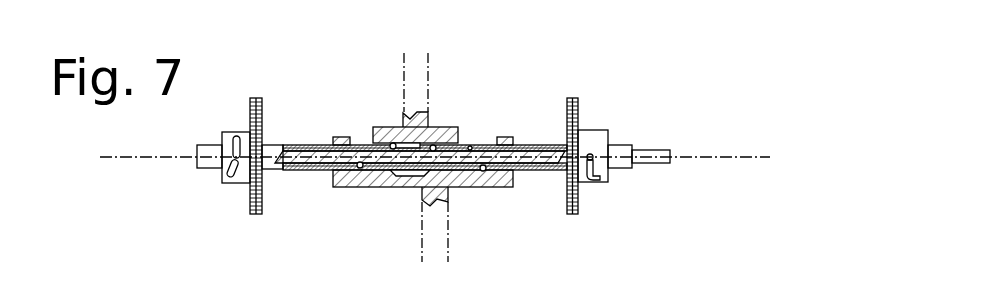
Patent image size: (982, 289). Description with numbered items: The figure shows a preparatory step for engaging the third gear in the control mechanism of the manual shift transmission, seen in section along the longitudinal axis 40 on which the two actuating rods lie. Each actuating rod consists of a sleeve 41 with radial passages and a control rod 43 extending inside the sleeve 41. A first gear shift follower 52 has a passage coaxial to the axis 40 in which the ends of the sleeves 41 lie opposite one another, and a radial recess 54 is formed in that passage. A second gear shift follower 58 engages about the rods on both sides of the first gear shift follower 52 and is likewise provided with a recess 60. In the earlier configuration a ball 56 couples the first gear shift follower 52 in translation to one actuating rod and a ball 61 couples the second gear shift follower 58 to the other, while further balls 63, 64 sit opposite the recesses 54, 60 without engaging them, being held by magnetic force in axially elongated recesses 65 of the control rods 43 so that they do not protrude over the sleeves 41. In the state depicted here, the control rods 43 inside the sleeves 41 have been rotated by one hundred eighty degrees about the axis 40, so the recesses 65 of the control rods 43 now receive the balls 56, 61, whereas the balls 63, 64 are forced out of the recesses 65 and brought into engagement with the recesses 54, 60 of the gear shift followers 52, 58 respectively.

The longitudinal axis 40 is at (172, 157).
The sleeve 41 is at (293, 146).
The control rod 43 is at (313, 152).
The first gear shift follower 52 is at (415, 130).
The radial recess 54 is at (391, 144).
The ball 56 is at (470, 147).
The second gear shift follower 58 is at (334, 178).
The recess 60 is at (487, 168).
The ball 61 is at (358, 168).
The ball 63 is at (393, 145).
The ball 64 is at (485, 170).
The axially elongated recess 65 is at (470, 147).